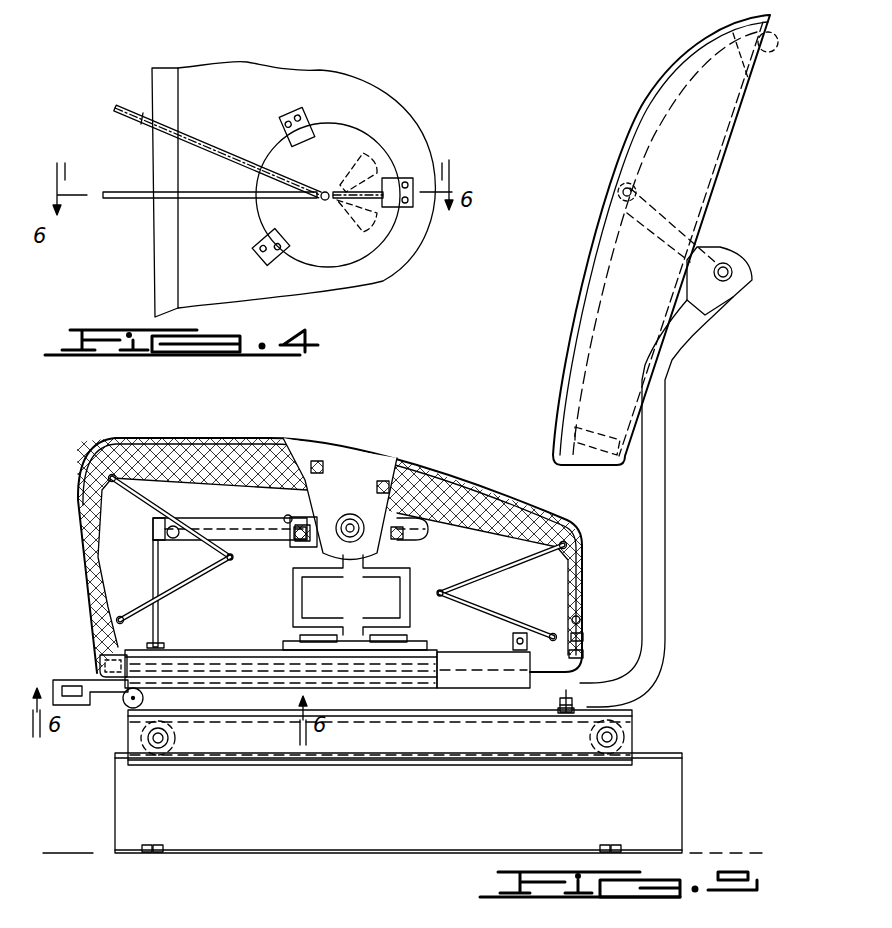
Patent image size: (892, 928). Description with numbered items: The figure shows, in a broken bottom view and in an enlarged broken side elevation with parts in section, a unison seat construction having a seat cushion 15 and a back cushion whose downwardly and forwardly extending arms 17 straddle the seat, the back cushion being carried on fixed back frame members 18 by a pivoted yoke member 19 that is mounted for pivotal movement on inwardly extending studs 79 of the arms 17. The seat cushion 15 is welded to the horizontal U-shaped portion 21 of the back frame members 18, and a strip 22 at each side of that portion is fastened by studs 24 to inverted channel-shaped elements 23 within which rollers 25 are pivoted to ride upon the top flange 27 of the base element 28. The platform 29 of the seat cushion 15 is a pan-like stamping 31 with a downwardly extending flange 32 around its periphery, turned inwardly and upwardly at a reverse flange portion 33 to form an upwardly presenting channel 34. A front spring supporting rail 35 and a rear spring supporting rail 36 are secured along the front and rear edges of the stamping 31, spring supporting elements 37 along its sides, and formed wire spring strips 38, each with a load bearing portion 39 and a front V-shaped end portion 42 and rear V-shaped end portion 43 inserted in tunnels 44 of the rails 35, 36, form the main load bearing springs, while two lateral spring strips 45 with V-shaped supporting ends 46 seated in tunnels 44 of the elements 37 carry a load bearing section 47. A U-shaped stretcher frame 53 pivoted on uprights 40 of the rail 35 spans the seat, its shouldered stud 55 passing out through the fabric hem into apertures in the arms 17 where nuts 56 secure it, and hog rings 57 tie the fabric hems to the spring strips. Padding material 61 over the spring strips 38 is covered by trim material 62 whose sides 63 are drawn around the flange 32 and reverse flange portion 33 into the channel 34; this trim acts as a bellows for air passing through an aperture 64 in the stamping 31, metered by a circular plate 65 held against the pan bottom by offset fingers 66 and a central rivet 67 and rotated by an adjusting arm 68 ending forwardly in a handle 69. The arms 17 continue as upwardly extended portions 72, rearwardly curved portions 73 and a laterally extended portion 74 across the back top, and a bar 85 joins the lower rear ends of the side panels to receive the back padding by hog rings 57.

In FIG. 5, the seat cushion 15 is at (600, 585).
In FIG. 5, the arms 17 is at (565, 480).
In FIG. 5, the back frame members 18 is at (642, 485).
In FIG. 5, the pivoted yoke member 19 is at (708, 242).
In FIG. 5, the horizontal U-shaped portion 21 is at (127, 703).
In FIG. 5, the strip 22 is at (583, 708).
In FIG. 5, the inverted channel-shaped elements 23 is at (627, 710).
In FIG. 5, the studs 24 is at (170, 700).
In FIG. 5, the rollers 25 is at (177, 752).
In FIG. 5, the top flange 27 is at (673, 753).
In FIG. 5, the base element 28 is at (660, 798).
In FIG. 5, the platform 29 is at (580, 622).
In FIG. 4, the stamping 31 is at (413, 233).
In FIG. 5, the stamping 31 is at (460, 650).
In FIG. 5, the downwardly extending flange 32 is at (583, 638).
In FIG. 5, the reverse flange portion 33 is at (483, 670).
In FIG. 5, the upwardly presenting channel 34 is at (583, 656).
In FIG. 5, the front spring supporting rail 35 is at (158, 632).
In FIG. 5, the rear spring supporting rail 36 is at (518, 633).
In FIG. 5, the spring supporting elements 37 is at (283, 642).
In FIG. 5, the formed wire spring strips 38 is at (229, 484).
In FIG. 5, the load bearing portion 39 is at (265, 445).
In FIG. 5, the uprights 40 is at (153, 547).
In FIG. 5, the front V-shaped end portion 42 is at (210, 572).
In FIG. 5, the rear V-shaped end portion 43 is at (485, 575).
In FIG. 5, the tunnels 44 is at (118, 620).
In FIG. 5, the lateral spring strips 45 is at (372, 597).
In FIG. 5, the V-shaped supporting ends 46 is at (425, 577).
In FIG. 5, the load bearing section 47 is at (293, 520).
In FIG. 5, the U-shaped stretcher frame 53 is at (270, 537).
In FIG. 5, the shouldered stud 55 is at (355, 518).
In FIG. 5, the nuts 56 is at (350, 513).
In FIG. 5, the hog rings 57 is at (267, 522).
In FIG. 5, the padding material 61 is at (178, 445).
In FIG. 5, the trim material 62 is at (117, 447).
In FIG. 5, the sides 63 is at (87, 587).
In FIG. 4, the aperture 64 is at (367, 170).
In FIG. 4, the circular plate 65 is at (360, 240).
In FIG. 4, the offset fingers 66 is at (418, 192).
In FIG. 4, the central rivet 67 is at (323, 200).
In FIG. 4, the adjusting arm 68 is at (203, 200).
In FIG. 4, the handle 69 is at (122, 200).
In FIG. 5, the handle 69 is at (83, 657).
In FIG. 5, the upwardly extended portions 72 is at (578, 322).
In FIG. 5, the rearwardly curved portions 73 is at (750, 80).
In FIG. 5, the laterally extended portion 74 is at (765, 50).
In FIG. 5, the inwardly extending studs 79 is at (632, 190).
In FIG. 5, the bar 85 is at (618, 447).